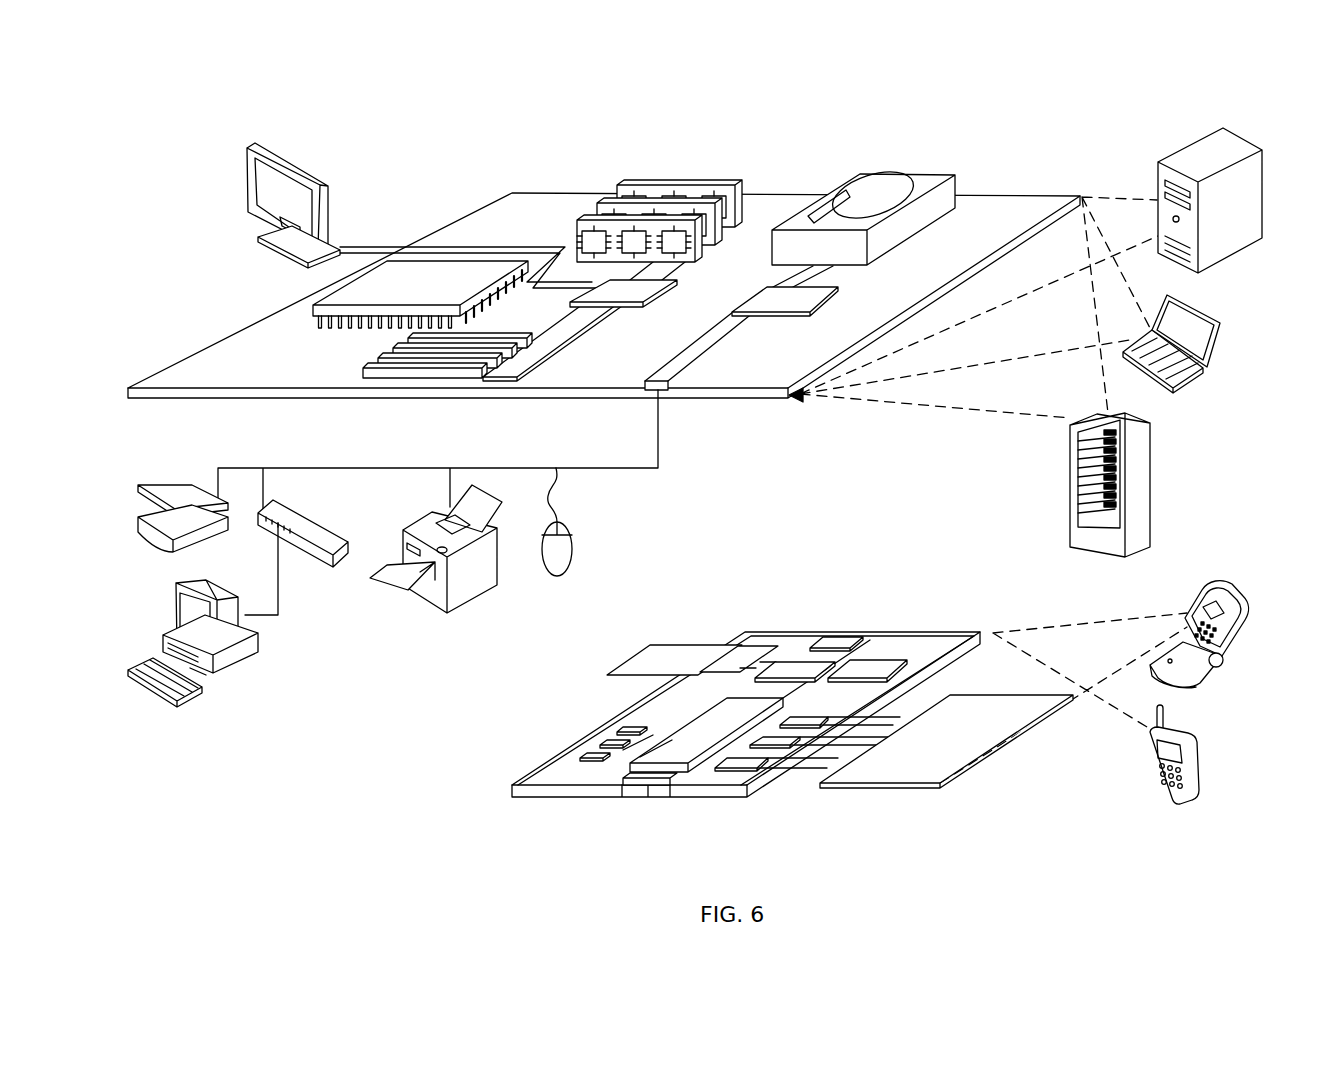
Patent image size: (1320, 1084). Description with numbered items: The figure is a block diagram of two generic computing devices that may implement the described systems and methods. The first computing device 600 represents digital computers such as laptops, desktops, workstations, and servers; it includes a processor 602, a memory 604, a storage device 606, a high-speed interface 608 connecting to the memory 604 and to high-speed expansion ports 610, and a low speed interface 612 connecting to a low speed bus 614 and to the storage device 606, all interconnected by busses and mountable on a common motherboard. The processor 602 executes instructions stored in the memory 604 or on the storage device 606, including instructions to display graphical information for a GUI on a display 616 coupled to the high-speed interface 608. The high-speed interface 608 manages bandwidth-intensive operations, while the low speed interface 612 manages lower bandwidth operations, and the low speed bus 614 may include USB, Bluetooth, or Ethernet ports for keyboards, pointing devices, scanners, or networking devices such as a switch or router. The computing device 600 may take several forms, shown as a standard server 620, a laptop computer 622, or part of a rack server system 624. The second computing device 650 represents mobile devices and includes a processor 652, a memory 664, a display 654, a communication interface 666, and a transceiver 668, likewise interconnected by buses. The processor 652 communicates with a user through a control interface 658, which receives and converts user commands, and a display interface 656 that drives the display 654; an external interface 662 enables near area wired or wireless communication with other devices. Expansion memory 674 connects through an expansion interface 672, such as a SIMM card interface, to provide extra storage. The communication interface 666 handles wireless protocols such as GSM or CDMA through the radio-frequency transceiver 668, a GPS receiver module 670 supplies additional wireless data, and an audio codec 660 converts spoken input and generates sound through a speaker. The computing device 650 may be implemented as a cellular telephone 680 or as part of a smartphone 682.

The computing device 600 is at (436, 165).
The processor 602 is at (312, 312).
The memory 604 is at (632, 203).
The storage device 606 is at (846, 180).
The high-speed interface 608 is at (612, 300).
The high-speed expansion ports 610 is at (400, 362).
The low speed interface 612 is at (758, 300).
The low speed bus 614 is at (668, 390).
The display 616 is at (250, 149).
The standard server 620 is at (1158, 181).
The laptop computer 622 is at (1220, 324).
The rack server system 624 is at (1070, 511).
The computing device 650 is at (490, 796).
The processor 652 is at (680, 755).
The display 654 is at (908, 773).
The display interface 656 is at (745, 762).
The control interface 658 is at (778, 742).
The audio codec 660 is at (805, 722).
The external interface 662 is at (650, 780).
The memory 664 is at (595, 752).
The communication interface 666 is at (796, 668).
The transceiver 668 is at (870, 668).
The GPS receiver module 670 is at (846, 636).
The expansion interface 672 is at (726, 648).
The expansion memory 674 is at (660, 648).
The cellular telephone 680 is at (1194, 597).
The smartphone 682 is at (1150, 762).